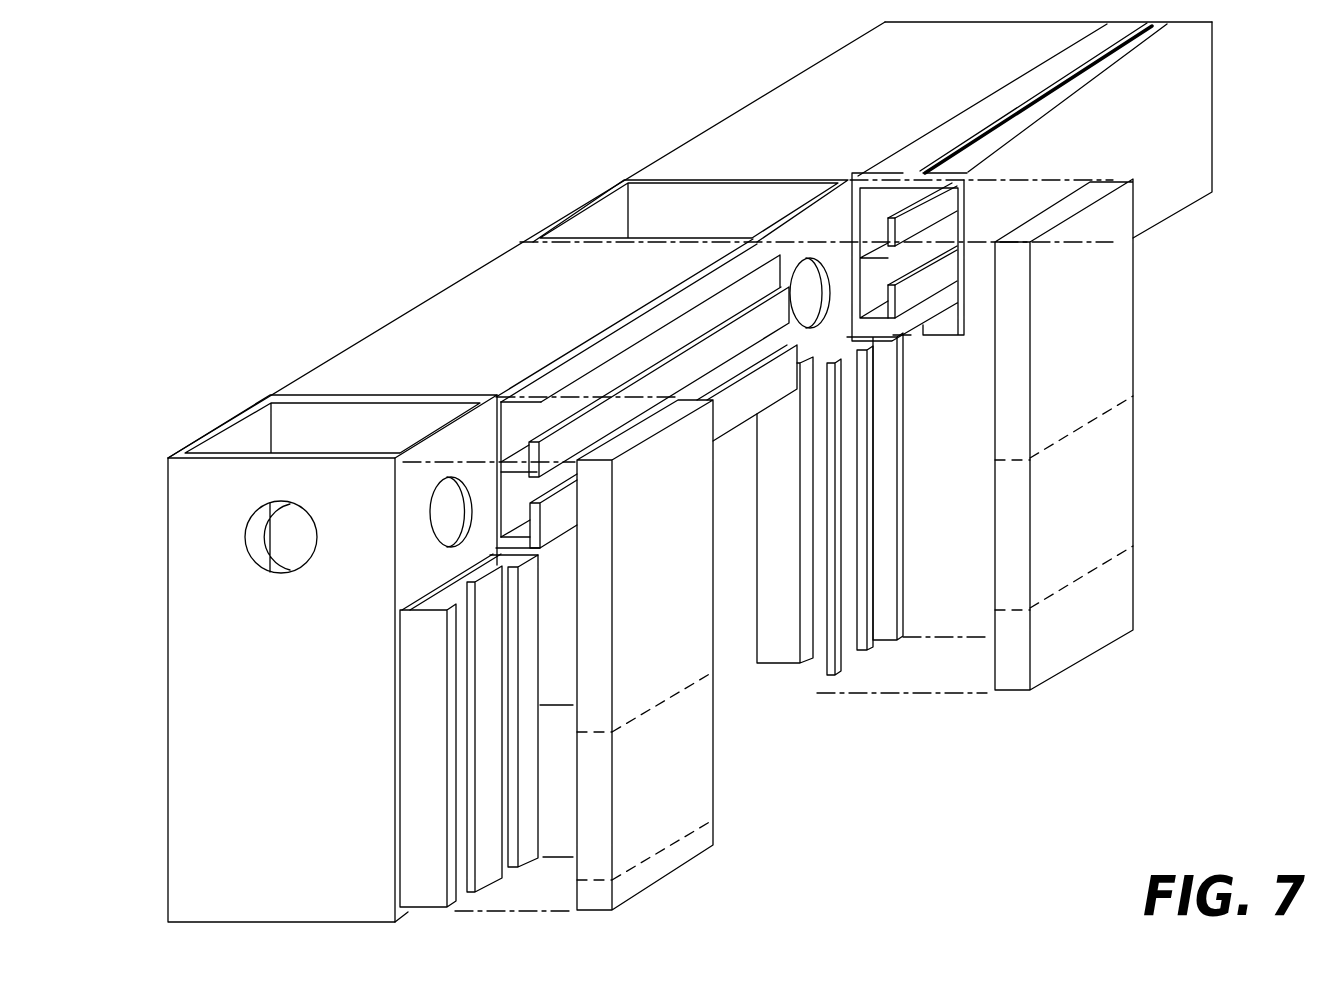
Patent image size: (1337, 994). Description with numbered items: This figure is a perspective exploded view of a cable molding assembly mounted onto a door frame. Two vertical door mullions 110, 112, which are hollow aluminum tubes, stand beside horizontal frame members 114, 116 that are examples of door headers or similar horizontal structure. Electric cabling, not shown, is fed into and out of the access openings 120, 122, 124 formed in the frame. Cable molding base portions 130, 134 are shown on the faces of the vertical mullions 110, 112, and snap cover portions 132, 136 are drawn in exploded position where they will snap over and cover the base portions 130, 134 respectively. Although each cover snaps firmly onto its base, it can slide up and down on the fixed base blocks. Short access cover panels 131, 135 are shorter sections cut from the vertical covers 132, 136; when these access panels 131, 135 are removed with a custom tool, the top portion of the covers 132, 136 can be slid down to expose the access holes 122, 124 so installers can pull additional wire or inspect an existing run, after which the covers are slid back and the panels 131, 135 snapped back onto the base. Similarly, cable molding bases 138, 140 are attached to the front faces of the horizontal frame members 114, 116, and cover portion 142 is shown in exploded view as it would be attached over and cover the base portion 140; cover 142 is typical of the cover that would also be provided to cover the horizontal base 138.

The vertical door mullion 110 is at (197, 668).
The vertical door mullion 112 is at (670, 208).
The horizontal frame member 114 is at (440, 315).
The horizontal frame member 116 is at (743, 142).
The access opening 120 is at (246, 540).
The access opening 122 is at (430, 510).
The access opening 124 is at (813, 292).
The cable molding base portion 130 is at (422, 733).
The access cover panel 131 is at (690, 782).
The snap cover portion 132 is at (688, 635).
The cable molding base portion 134 is at (845, 543).
The access cover panel 135 is at (1099, 519).
The snap cover portion 136 is at (1067, 376).
The cable molding base 138 is at (690, 363).
The cable molding base 140 is at (931, 214).
The cover portion 142 is at (1164, 190).